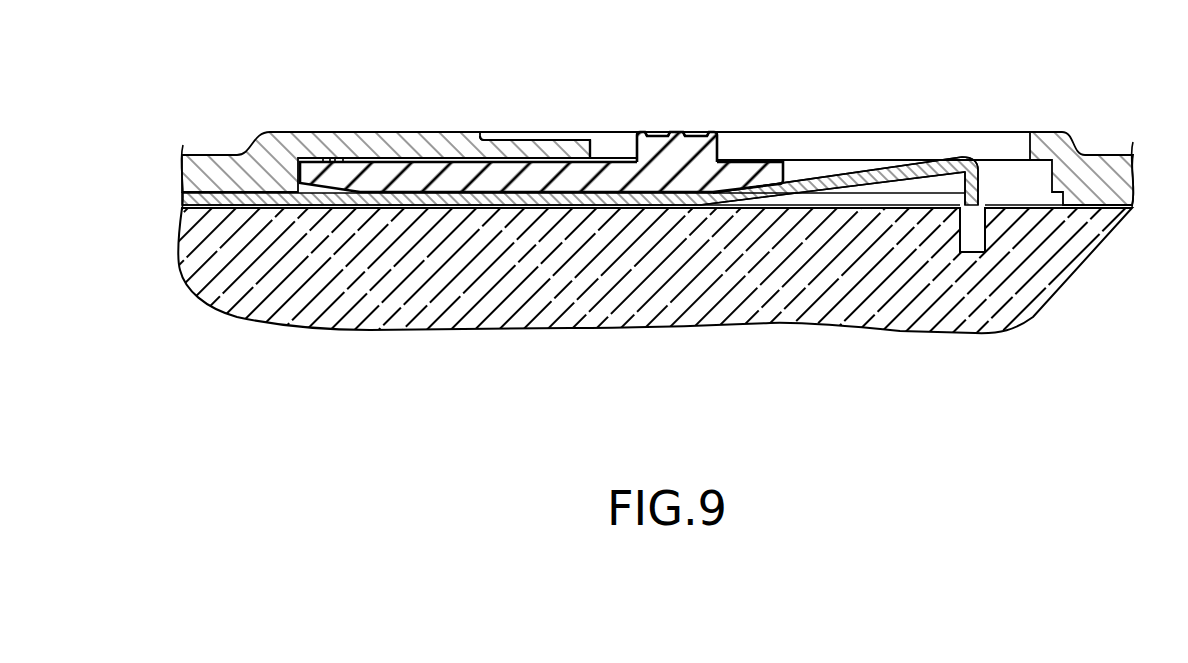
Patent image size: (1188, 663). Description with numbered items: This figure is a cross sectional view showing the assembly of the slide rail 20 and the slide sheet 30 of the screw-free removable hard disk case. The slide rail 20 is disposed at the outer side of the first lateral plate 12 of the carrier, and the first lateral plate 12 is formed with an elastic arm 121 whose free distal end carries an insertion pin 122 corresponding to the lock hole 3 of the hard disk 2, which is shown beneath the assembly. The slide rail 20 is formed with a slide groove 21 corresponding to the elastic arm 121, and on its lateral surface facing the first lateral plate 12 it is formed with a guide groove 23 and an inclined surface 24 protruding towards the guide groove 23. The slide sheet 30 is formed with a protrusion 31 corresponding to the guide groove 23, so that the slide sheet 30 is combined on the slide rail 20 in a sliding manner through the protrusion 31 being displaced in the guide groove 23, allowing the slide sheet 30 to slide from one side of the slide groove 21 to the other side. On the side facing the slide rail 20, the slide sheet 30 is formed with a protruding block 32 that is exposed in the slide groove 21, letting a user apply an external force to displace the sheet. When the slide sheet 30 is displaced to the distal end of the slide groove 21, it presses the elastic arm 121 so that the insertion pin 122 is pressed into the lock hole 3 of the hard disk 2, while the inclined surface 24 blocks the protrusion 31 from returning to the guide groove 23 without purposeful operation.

The hard disk 2 is at (607, 275).
The lock hole 3 is at (975, 232).
The first lateral plate 12 is at (447, 197).
The elastic arm 121 is at (873, 173).
The insertion pin 122 is at (982, 184).
The slide rail 20 is at (442, 160).
The slide groove 21 is at (810, 145).
The guide groove 23 is at (503, 152).
The inclined surface 24 is at (586, 152).
The slide sheet 30 is at (704, 124).
The protrusion 31 is at (345, 158).
The protruding block 32 is at (658, 152).